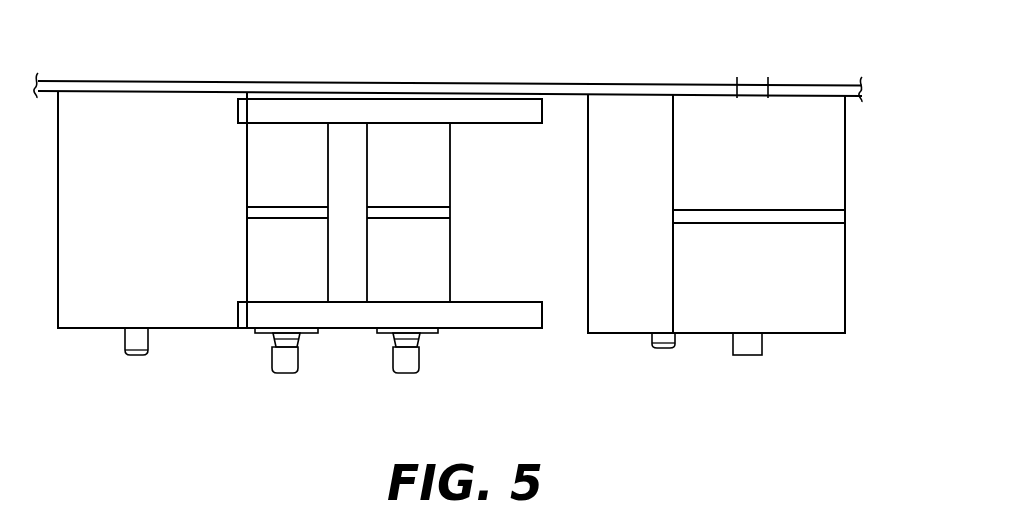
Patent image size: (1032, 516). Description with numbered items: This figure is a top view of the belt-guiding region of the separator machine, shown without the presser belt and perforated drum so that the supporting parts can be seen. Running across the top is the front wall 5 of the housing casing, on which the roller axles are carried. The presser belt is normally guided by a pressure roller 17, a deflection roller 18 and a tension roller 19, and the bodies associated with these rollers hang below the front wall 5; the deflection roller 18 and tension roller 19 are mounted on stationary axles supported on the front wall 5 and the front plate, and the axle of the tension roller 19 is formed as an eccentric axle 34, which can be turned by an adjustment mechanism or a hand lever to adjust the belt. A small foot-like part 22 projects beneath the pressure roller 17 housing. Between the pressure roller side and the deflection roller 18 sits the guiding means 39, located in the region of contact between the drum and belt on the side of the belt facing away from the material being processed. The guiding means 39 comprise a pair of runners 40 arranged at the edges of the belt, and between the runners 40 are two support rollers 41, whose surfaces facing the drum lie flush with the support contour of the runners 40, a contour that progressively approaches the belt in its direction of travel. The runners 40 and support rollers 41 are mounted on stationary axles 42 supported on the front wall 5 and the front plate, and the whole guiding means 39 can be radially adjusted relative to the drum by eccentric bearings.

The front wall 5 is at (594, 83).
The pressure roller 17 is at (90, 320).
The deflection roller 18 is at (615, 313).
The tension roller 19 is at (797, 323).
The mounting foot 22 is at (150, 338).
The eccentric axle 34 is at (738, 343).
The guiding means 39 is at (377, 279).
The runners 40 is at (487, 117).
The support rollers 41 is at (439, 185).
The stationary axles 42 is at (300, 335).